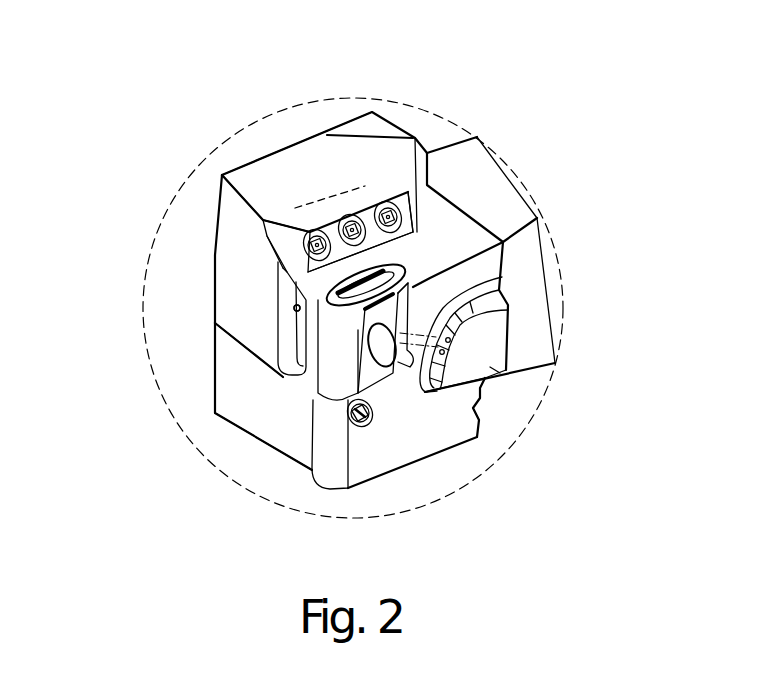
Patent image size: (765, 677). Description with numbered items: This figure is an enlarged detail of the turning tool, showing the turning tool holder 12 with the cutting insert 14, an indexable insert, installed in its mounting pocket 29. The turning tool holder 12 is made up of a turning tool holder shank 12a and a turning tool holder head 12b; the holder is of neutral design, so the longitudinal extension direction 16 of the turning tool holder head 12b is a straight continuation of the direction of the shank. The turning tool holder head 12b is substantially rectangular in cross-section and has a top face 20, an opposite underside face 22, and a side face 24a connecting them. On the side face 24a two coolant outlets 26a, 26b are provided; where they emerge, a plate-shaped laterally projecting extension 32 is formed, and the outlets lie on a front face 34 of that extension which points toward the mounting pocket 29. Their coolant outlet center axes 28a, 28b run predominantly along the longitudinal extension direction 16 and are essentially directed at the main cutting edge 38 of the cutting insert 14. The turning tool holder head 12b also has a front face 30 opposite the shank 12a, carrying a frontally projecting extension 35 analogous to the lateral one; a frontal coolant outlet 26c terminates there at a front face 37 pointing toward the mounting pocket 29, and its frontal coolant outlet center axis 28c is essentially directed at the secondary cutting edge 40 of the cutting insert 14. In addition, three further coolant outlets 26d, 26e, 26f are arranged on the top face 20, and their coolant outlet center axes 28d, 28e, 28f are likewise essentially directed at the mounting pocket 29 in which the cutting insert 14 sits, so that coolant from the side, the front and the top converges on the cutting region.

The turning tool holder 12 is at (548, 302).
The turning tool holder shank 12a is at (497, 200).
The turning tool holder head 12b is at (277, 165).
The cutting insert 14 is at (320, 403).
The longitudinal extension direction 16 is at (356, 220).
The top face 20 is at (250, 183).
The underside face 22 is at (459, 467).
The side face 24a is at (465, 424).
The coolant outlet 26a is at (448, 334).
The coolant outlet 26b is at (504, 367).
The coolant outlet 26c is at (286, 298).
The coolant outlet 26d is at (262, 222).
The coolant outlet 26e is at (350, 216).
The coolant outlet 26f is at (418, 235).
The coolant outlet center axis 28a is at (502, 278).
The coolant outlet center axis 28b is at (372, 425).
The frontal coolant outlet center axis 28c is at (277, 277).
The coolant outlet center axis 28d is at (280, 302).
The coolant outlet center axis 28e is at (388, 208).
The coolant outlet center axis 28f is at (424, 220).
The mounting pocket 29 is at (330, 320).
The front face 30 is at (222, 395).
The laterally projecting extension 32 is at (493, 367).
The front face 34 is at (413, 388).
The frontally projecting extension 35 is at (262, 340).
The front face 37 is at (285, 280).
The main cutting edge 38 is at (359, 332).
The secondary cutting edge 40 is at (233, 389).